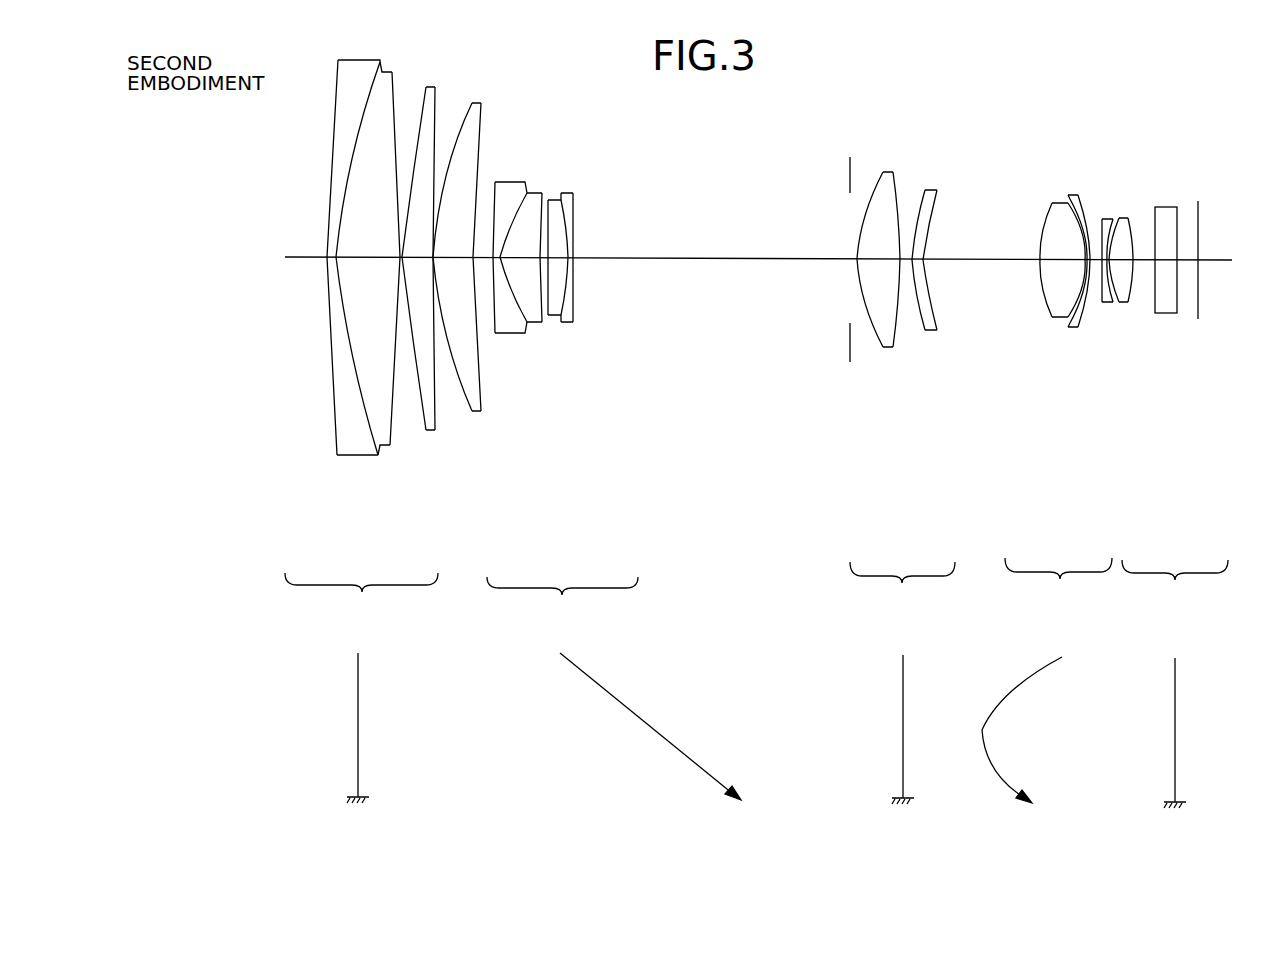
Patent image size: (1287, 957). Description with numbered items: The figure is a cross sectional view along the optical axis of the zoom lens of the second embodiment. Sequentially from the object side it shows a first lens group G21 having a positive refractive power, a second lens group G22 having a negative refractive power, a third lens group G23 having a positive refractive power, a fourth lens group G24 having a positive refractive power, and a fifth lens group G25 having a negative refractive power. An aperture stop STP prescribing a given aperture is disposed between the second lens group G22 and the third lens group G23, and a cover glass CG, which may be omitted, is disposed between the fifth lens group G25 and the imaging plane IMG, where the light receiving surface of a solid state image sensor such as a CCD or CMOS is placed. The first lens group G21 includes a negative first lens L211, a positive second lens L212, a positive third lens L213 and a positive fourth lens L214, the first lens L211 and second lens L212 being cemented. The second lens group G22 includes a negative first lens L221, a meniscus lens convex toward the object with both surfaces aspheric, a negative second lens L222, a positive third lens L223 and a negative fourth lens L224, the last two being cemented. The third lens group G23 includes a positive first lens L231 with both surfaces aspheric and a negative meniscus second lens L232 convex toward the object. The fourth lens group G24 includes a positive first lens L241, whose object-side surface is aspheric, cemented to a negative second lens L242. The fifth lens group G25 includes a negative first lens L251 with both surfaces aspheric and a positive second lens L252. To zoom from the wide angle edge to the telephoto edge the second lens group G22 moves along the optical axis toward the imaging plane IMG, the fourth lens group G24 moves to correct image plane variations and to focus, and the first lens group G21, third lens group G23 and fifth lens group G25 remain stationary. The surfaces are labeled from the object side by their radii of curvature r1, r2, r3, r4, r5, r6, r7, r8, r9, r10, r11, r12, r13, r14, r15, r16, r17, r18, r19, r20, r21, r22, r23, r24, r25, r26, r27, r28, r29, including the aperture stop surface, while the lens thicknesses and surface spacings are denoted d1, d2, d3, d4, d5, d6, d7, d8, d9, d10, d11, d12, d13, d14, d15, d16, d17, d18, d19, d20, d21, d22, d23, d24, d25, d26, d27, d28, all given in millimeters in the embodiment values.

The first lens group G21 is at (398, 424).
The second lens group G22 is at (611, 455).
The third lens group G23 is at (896, 466).
The fourth lens group G24 is at (1047, 459).
The fifth lens group G25 is at (1156, 447).
The first lens of first lens group L211 is at (327, 303).
The second lens of first lens group L212 is at (387, 295).
The third lens of first lens group L213 is at (428, 306).
The fourth lens of first lens group L214 is at (469, 321).
The first lens of second lens group L221 is at (505, 341).
The second lens of second lens group L222 is at (546, 328).
The third lens of second lens group L223 is at (587, 336).
The fourth lens of second lens group L224 is at (611, 369).
The first lens of third lens group L231 is at (860, 326).
The second lens of third lens group L232 is at (949, 332).
The first lens of fourth lens group L241 is at (1043, 344).
The second lens of fourth lens group L242 is at (1084, 319).
The first lens of fifth lens group L251 is at (1129, 307).
The second lens of fifth lens group L252 is at (1168, 322).
The aperture stop STP is at (848, 158).
The cover glass CG is at (1163, 210).
The imaging plane IMG is at (1202, 200).
The radius of curvature r1 is at (332, 134).
The radius of curvature r2 is at (373, 90).
The radius of curvature r3 is at (396, 95).
The radius of curvature r4 is at (414, 105).
The radius of curvature r5 is at (434, 125).
The radius of curvature r6 is at (462, 105).
The radius of curvature r7 is at (483, 107).
The radius of curvature r8 is at (495, 186).
The radius of curvature r9 is at (512, 222).
The radius of curvature r10 is at (540, 192).
The radius of curvature r11 is at (549, 196).
The radius of curvature r12 is at (562, 190).
The radius of curvature r13 is at (566, 218).
The radius of curvature r14 is at (574, 240).
The radius of curvature r15 is at (849, 183).
The radius of curvature r16 is at (867, 222).
The radius of curvature r17 is at (901, 185).
The radius of curvature r18 is at (921, 198).
The radius of curvature r19 is at (929, 228).
The radius of curvature r20 is at (1044, 232).
The radius of curvature r21 is at (1077, 219).
The radius of curvature r22 is at (1082, 218).
The radius of curvature r23 is at (1100, 218).
The radius of curvature r24 is at (1104, 218).
The radius of curvature r25 is at (1121, 218).
The radius of curvature r26 is at (1135, 218).
The radius of curvature r27 is at (1181, 225).
The radius of curvature r28 is at (1182, 235).
The radius of curvature r29 is at (1200, 252).
The surface distance d1 is at (328, 264).
The surface distance d2 is at (340, 293).
The surface distance d3 is at (398, 268).
The surface distance d4 is at (418, 274).
The surface distance d5 is at (440, 322).
The surface distance d6 is at (456, 275).
The surface distance d7 is at (498, 298).
The surface distance d8 is at (506, 320).
The surface distance d9 is at (521, 262).
The surface distance d10 is at (545, 262).
The surface distance d11 is at (556, 262).
The surface distance d12 is at (566, 262).
The surface distance d13 is at (573, 262).
The surface distance d14 is at (733, 268).
The surface distance d15 is at (849, 266).
The surface distance d16 is at (881, 262).
The surface distance d17 is at (906, 262).
The surface distance d18 is at (920, 266).
The surface distance d19 is at (985, 264).
The surface distance d20 is at (1050, 264).
The surface distance d21 is at (1087, 264).
The surface distance d22 is at (1095, 288).
The surface distance d23 is at (1112, 304).
The surface distance d24 is at (1128, 308).
The surface distance d25 is at (1140, 290).
The surface distance d26 is at (1170, 292).
The surface distance d27 is at (1186, 272).
The surface distance d28 is at (1200, 268).